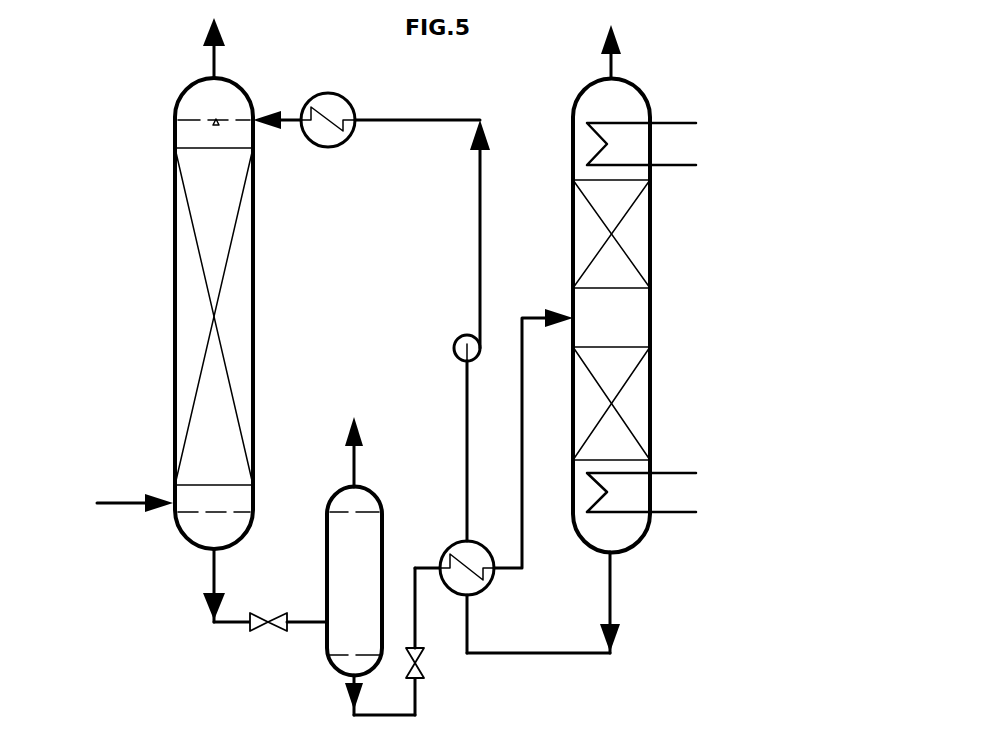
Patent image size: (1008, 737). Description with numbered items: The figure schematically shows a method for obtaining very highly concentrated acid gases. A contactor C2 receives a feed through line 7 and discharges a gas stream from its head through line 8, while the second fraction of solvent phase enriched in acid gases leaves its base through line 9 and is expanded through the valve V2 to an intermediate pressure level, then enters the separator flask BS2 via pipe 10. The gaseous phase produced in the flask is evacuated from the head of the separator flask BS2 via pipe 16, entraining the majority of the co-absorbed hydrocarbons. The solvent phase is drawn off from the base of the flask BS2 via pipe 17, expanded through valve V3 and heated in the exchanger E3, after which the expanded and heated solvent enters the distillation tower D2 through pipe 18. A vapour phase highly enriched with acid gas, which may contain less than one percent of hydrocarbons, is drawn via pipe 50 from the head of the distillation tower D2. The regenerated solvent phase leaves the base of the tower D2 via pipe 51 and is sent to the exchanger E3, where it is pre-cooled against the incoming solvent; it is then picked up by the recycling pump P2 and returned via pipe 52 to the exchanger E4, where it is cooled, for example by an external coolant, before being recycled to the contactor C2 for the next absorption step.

The feed line to column C2 7 is at (104, 498).
The overhead outlet of column C2 8 is at (215, 70).
The bottom outlet line of column C2 9 is at (212, 576).
The pipe 10 is at (297, 628).
The pipe 16 is at (350, 455).
The pipe 17 is at (350, 705).
The pipe 18 is at (522, 575).
The pipe 50 is at (612, 70).
The pipe 51 is at (610, 582).
The pipe 52 is at (466, 396).
The contactor C2 is at (253, 291).
The exchanger E4 is at (304, 102).
The exchanger E3 is at (460, 581).
The recycling pump P2 is at (466, 421).
The separator flask BS2 is at (325, 537).
The valve V2 is at (268, 610).
The valve V3 is at (427, 664).
The distillation tower D2 is at (650, 292).